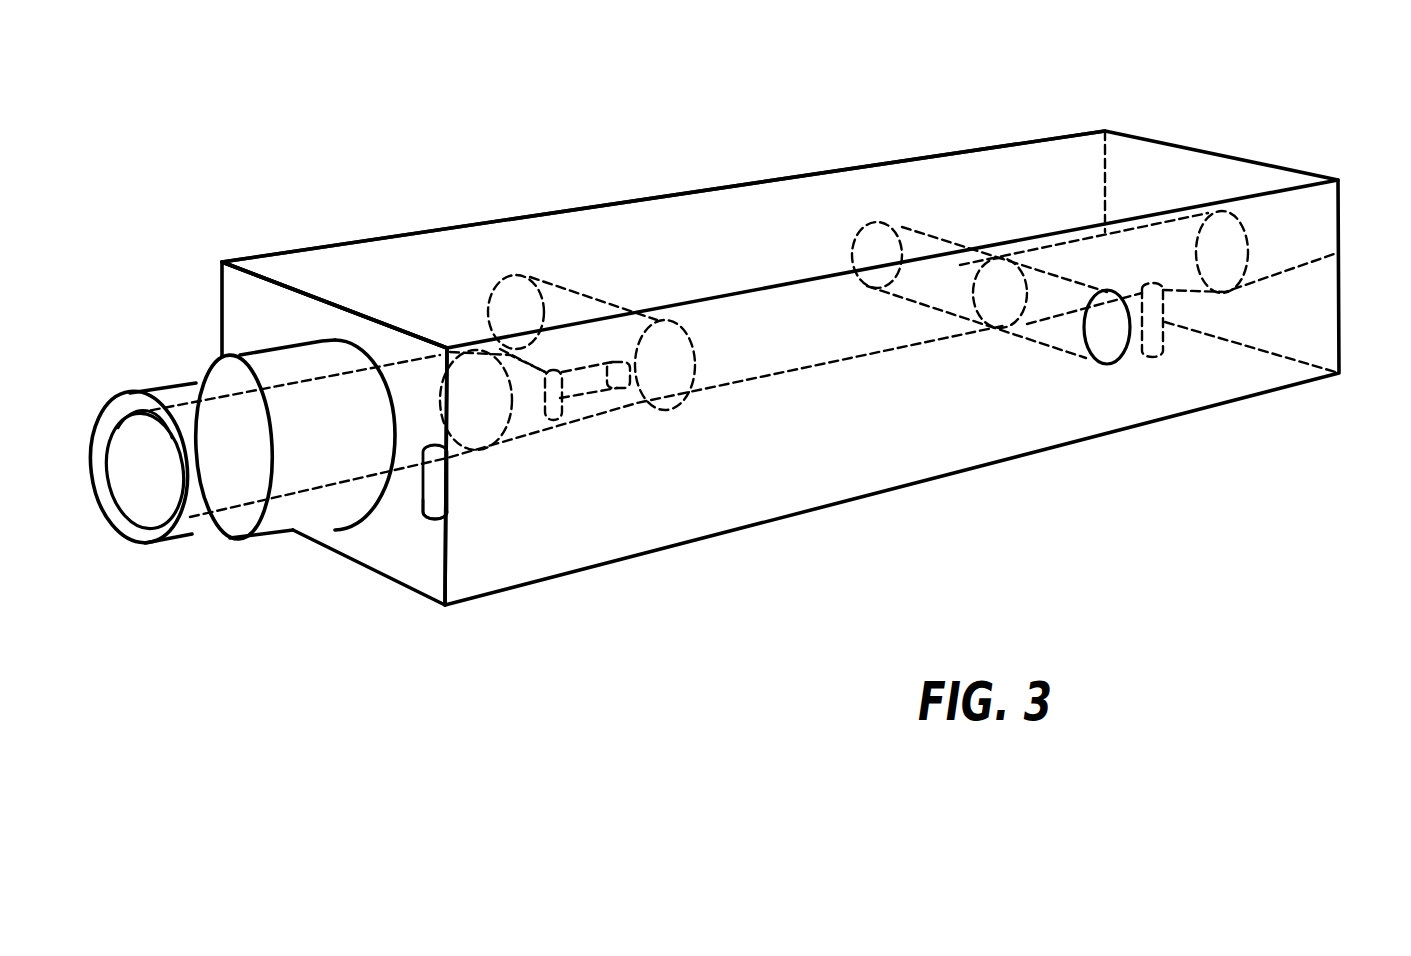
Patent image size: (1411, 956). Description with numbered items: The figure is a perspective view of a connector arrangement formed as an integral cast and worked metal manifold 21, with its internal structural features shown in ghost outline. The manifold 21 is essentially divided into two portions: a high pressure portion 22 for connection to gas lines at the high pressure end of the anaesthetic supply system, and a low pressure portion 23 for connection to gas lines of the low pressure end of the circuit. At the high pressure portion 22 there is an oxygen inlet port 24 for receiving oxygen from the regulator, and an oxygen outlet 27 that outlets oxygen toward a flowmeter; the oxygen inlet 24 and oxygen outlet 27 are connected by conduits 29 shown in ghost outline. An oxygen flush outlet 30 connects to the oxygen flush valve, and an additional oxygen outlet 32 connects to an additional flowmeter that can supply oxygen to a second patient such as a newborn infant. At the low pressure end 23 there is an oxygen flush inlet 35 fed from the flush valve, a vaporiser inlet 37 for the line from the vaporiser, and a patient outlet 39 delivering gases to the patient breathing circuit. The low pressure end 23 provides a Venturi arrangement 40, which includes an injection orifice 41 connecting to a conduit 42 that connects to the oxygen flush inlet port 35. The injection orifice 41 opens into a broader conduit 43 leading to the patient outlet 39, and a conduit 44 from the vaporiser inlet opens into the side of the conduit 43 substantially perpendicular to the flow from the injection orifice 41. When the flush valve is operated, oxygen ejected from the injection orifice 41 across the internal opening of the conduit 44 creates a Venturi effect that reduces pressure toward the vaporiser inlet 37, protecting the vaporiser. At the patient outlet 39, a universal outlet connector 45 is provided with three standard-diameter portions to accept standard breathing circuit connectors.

The manifold 21 is at (1167, 503).
The high pressure portion 22 is at (1026, 148).
The low pressure portion 23 is at (292, 232).
The oxygen inlet port 24 is at (1157, 357).
The oxygen outlet 27 is at (1257, 237).
The conduits 29 is at (1343, 253).
The oxygen flush outlet 30 is at (1103, 350).
The additional oxygen outlet 32 is at (857, 240).
The oxygen flush inlet 35 is at (500, 300).
The vaporiser inlet 37 is at (432, 515).
The patient outlet 39 is at (150, 506).
The Venturi arrangement 40 is at (498, 453).
The injection orifice 41 is at (547, 427).
The conduit 42 is at (608, 395).
The broader conduit 43 is at (398, 380).
The conduit from the vaporiser inlet 44 is at (423, 492).
The universal outlet connector 45 is at (257, 538).